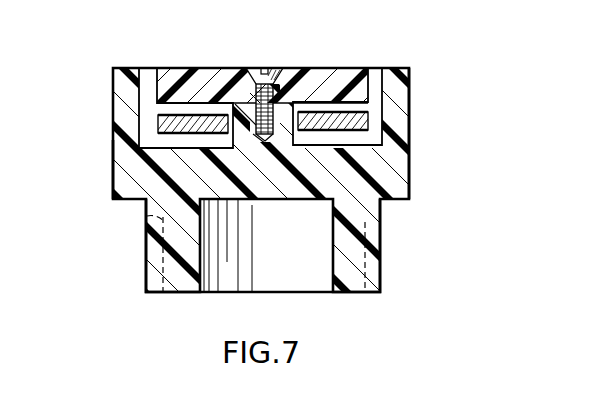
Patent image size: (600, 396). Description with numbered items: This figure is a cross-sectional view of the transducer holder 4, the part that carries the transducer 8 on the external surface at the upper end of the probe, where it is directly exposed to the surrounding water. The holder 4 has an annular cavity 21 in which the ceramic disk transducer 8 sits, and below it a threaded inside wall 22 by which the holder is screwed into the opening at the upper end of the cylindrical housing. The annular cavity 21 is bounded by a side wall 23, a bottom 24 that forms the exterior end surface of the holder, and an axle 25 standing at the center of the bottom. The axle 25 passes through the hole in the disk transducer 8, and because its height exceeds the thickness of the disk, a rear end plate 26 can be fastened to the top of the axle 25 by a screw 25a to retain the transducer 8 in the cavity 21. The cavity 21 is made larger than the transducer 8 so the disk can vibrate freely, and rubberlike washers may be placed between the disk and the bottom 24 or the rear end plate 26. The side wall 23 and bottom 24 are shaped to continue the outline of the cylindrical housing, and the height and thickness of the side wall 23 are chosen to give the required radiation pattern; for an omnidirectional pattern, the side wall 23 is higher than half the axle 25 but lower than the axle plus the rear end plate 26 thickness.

The transducer holder 4 is at (408, 76).
The annular cavity 21 is at (152, 103).
The transducer 8 is at (368, 119).
The rear end plate 26 is at (341, 80).
The screw 25a is at (263, 67).
The axle 25 is at (246, 131).
The side wall 23 is at (406, 96).
The bottom 24 is at (127, 185).
The threaded inside wall 22 is at (393, 258).